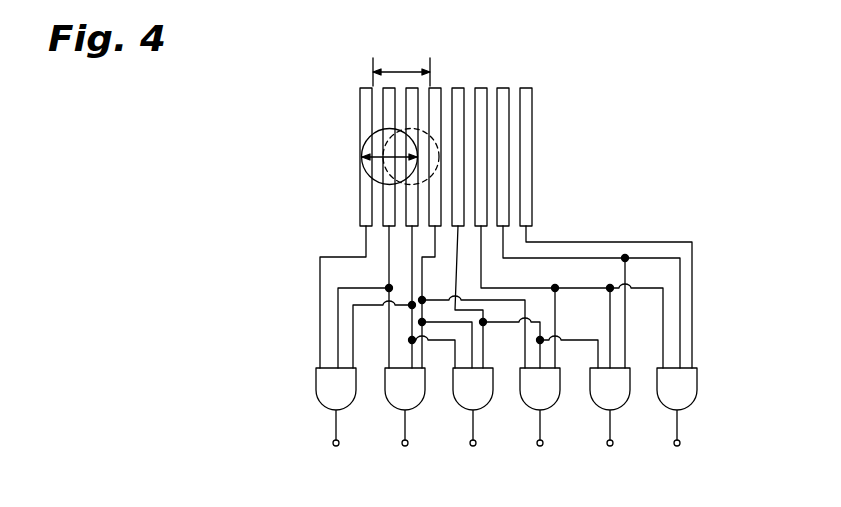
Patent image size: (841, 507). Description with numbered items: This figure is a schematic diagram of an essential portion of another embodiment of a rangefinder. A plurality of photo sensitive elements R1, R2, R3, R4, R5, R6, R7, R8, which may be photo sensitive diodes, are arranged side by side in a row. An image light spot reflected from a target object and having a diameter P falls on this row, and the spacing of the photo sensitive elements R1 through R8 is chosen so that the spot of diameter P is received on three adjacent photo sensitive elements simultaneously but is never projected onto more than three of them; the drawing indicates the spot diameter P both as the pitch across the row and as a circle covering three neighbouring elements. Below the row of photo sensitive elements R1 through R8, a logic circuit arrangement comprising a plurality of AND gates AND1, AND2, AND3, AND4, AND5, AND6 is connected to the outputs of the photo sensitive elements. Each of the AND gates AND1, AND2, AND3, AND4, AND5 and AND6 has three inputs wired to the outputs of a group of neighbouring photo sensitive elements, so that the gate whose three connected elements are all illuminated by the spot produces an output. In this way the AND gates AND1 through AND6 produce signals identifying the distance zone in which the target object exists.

The diameter of image light spot P is at (337, 155).
The photo sensitive element R1 is at (362, 116).
The photo sensitive element R2 is at (385, 192).
The photo sensitive element R3 is at (408, 207).
The photo sensitive element R4 is at (440, 122).
The photo sensitive element R5 is at (457, 162).
The photo sensitive element R6 is at (478, 187).
The photo sensitive element R7 is at (502, 213).
The photo sensitive element R8 is at (527, 223).
The AND gate AND1 is at (322, 402).
The AND gate AND2 is at (392, 403).
The AND gate AND3 is at (462, 402).
The AND gate AND4 is at (530, 400).
The AND gate AND5 is at (603, 402).
The AND gate AND6 is at (670, 402).